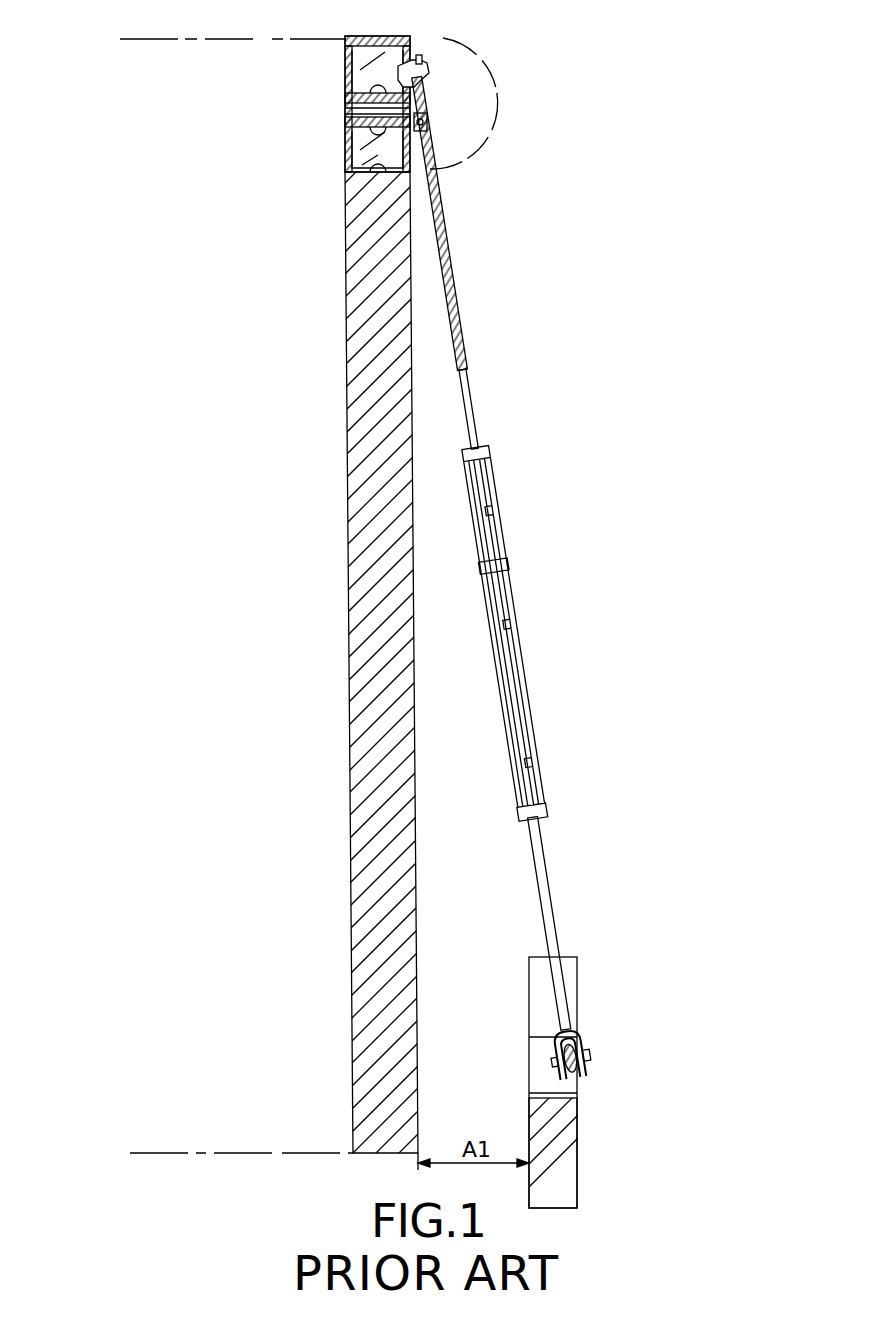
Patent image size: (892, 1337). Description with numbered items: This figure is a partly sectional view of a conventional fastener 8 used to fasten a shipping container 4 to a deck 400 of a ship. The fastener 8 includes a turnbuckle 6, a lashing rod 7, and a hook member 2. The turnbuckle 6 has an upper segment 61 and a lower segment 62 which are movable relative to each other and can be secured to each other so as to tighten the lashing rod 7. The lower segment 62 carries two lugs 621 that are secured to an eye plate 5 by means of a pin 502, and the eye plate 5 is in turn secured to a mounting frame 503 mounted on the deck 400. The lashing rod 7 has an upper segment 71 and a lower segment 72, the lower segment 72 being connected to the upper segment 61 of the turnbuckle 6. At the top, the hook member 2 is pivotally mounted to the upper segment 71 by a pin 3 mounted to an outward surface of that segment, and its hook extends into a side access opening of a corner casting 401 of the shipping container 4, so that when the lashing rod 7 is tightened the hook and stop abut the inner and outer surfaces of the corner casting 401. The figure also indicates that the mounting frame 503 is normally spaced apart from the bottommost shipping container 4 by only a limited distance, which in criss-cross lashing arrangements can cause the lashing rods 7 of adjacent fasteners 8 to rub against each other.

The hook member 2 is at (425, 64).
The pin 3 is at (430, 72).
The shipping container 4 is at (232, 1159).
The corner casting 401 is at (350, 40).
The deck 400 is at (605, 962).
The eye plate 5 is at (577, 1090).
The pin 502 is at (590, 1075).
The mounting frame 503 is at (570, 1160).
The turnbuckle 6 is at (668, 712).
The upper segment 61 is at (557, 750).
The lower segment 62 is at (563, 866).
The lugs 621 is at (556, 1043).
The lashing rod 7 is at (480, 328).
The upper segment 71 is at (432, 118).
The lower segment 72 is at (482, 423).
The fastener 8 is at (663, 367).